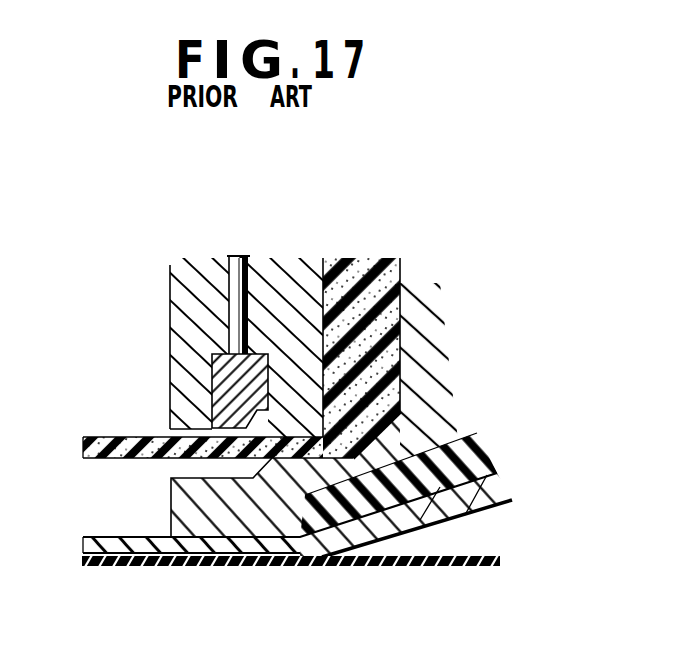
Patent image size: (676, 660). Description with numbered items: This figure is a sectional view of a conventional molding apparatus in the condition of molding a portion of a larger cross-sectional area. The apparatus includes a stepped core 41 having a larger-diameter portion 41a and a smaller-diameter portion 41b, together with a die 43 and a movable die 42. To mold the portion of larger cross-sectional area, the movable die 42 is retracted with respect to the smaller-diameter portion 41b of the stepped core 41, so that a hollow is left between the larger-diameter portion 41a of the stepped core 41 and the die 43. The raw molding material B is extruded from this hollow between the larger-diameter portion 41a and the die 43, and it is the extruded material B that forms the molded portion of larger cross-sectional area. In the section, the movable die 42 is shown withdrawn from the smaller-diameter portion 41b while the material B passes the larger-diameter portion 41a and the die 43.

The stepped core 41 is at (203, 470).
The larger-diameter portion 41a is at (313, 497).
The smaller-diameter portion 41b is at (223, 510).
The movable die 42 is at (210, 353).
The die 43 is at (292, 412).
The raw molding material B is at (400, 283).